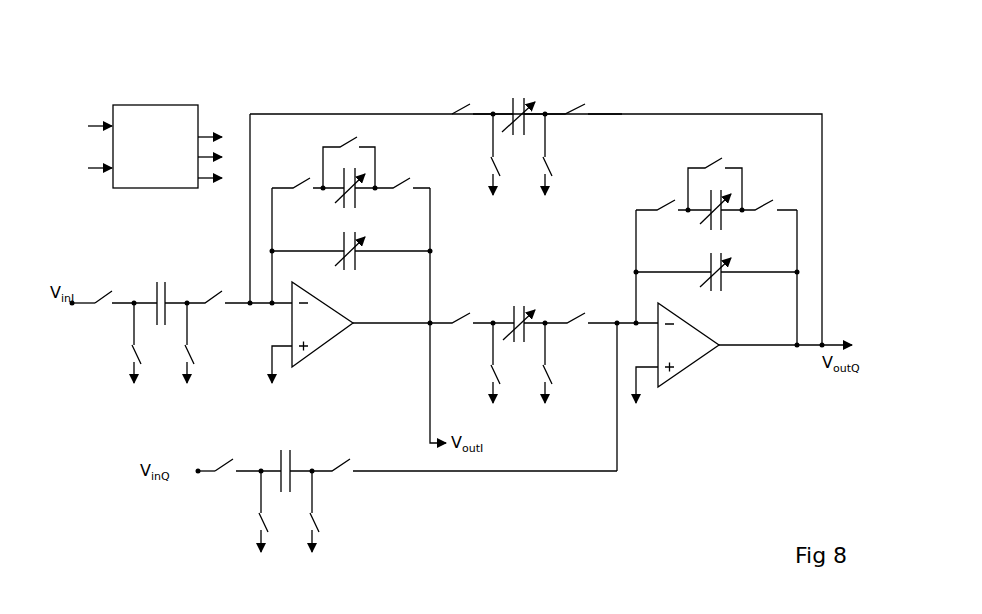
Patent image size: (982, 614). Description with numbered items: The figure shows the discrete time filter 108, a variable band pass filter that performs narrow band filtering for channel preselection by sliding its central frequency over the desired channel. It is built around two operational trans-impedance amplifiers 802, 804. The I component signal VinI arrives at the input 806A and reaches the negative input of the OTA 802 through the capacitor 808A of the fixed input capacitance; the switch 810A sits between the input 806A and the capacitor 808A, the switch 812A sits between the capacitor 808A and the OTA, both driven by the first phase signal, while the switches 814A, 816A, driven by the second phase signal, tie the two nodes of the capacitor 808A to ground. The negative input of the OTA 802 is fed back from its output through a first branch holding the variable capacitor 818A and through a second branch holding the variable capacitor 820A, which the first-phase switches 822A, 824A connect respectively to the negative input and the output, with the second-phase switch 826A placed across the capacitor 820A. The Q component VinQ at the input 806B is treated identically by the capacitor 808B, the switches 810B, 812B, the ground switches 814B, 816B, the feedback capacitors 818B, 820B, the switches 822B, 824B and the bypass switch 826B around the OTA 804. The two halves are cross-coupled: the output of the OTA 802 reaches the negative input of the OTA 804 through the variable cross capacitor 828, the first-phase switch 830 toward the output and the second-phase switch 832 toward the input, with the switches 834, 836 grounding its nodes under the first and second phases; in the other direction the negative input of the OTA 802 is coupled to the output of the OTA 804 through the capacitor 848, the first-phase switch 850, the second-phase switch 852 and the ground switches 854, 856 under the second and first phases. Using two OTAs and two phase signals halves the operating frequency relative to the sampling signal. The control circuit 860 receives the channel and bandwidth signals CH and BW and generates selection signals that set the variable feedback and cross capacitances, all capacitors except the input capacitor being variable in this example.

The discrete time filter 108 is at (812, 98).
The control circuit 860 is at (148, 112).
The operational trans-impedance amplifier 802 is at (322, 338).
The operational trans-impedance amplifier 804 is at (690, 356).
The input 806A is at (72, 307).
The input 806B is at (200, 477).
The capacitor 808A is at (169, 281).
The capacitor 808B is at (296, 459).
The switch 810A is at (100, 290).
The switch 810B is at (222, 462).
The switch 812A is at (206, 283).
The switch 812B is at (346, 452).
The switch 814A is at (140, 345).
The switch 814B is at (270, 516).
The switch 816A is at (180, 345).
The switch 816B is at (305, 516).
The capacitor 818A is at (340, 247).
The capacitor 818B is at (705, 268).
The capacitor 820A is at (372, 178).
The capacitor 820B is at (738, 192).
The switch 822A is at (298, 185).
The switch 822B is at (662, 199).
The switch 824A is at (432, 173).
The switch 824B is at (795, 189).
The switch 826A is at (338, 142).
The switch 826B is at (706, 160).
The capacitor 828 is at (531, 306).
The switch 830 is at (463, 328).
The switch 832 is at (577, 328).
The switch 834 is at (500, 370).
The switch 836 is at (538, 370).
The capacitor 848 is at (531, 98).
The switch 850 is at (462, 118).
The switch 852 is at (573, 118).
The switch 854 is at (500, 160).
The switch 856 is at (538, 160).